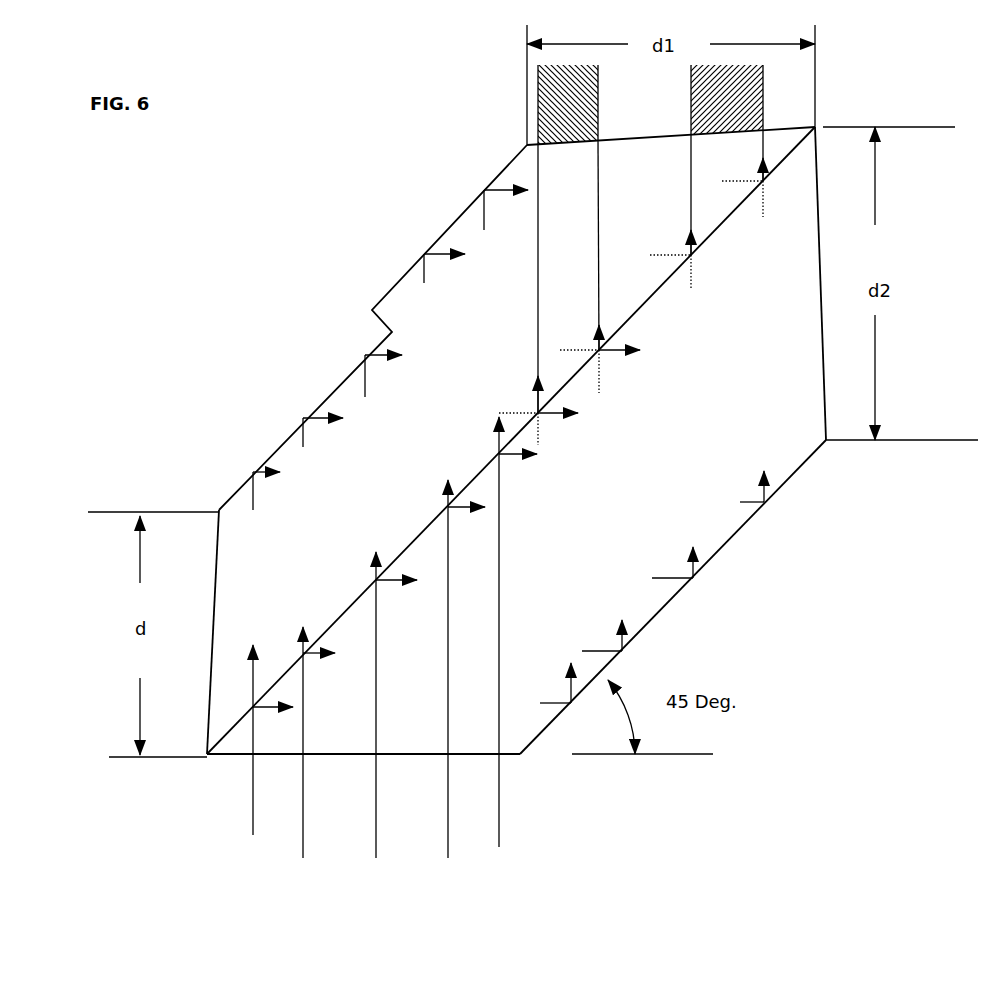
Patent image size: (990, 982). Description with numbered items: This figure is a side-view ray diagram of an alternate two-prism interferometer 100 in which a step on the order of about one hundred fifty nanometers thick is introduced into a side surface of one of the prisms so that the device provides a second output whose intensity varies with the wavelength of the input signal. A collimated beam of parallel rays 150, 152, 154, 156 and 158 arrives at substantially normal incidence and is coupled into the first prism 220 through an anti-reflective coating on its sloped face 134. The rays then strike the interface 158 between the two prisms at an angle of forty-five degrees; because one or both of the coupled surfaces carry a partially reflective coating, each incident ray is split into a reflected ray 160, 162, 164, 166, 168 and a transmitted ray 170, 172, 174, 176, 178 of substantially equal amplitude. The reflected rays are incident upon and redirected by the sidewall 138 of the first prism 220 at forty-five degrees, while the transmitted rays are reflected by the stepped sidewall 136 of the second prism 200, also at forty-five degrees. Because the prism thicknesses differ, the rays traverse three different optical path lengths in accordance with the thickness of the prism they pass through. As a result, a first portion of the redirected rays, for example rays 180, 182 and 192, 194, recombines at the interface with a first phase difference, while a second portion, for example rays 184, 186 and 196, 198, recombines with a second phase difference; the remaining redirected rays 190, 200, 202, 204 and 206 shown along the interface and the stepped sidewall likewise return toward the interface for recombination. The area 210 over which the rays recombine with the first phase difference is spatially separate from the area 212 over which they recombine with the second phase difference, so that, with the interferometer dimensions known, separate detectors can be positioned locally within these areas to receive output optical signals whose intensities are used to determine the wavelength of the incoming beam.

The optical device 100 is at (343, 280).
The sloped face 134 is at (223, 755).
The sidewall of the second prism 136 is at (283, 427).
The sidewall of the first prism 138 is at (678, 600).
The incoming parallel ray 150 is at (253, 828).
The incoming parallel ray 152 is at (313, 828).
The incoming parallel ray 154 is at (376, 835).
The incoming parallel ray 156 is at (448, 833).
The incoming parallel ray / interface 158 is at (508, 832).
The reflected ray 160 is at (268, 707).
The reflected ray 162 is at (332, 658).
The reflected ray 164 is at (382, 587).
The reflected ray 166 is at (455, 515).
The reflected ray 168 is at (512, 460).
The transmitted ray 170 is at (252, 682).
The transmitted ray 172 is at (300, 627).
The transmitted ray 174 is at (372, 560).
The transmitted ray 176 is at (443, 487).
The transmitted ray 178 is at (495, 433).
The redirected ray 180 is at (565, 680).
The redirected ray 182 is at (612, 642).
The redirected ray 184 is at (683, 550).
The redirected ray 186 is at (760, 485).
The transmitted beam vector 190 is at (255, 470).
The redirected ray 192 is at (300, 415).
The redirected ray 194 is at (372, 353).
The redirected ray 196 is at (438, 257).
The redirected ray 198 is at (490, 183).
The second prism 200 is at (537, 398).
The output beam vector 202 is at (598, 345).
The output beam vector 204 is at (690, 238).
The output beam vector 206 is at (762, 177).
The recombination area 210 is at (538, 87).
The recombination area 212 is at (693, 92).
The first prism 220 is at (770, 433).